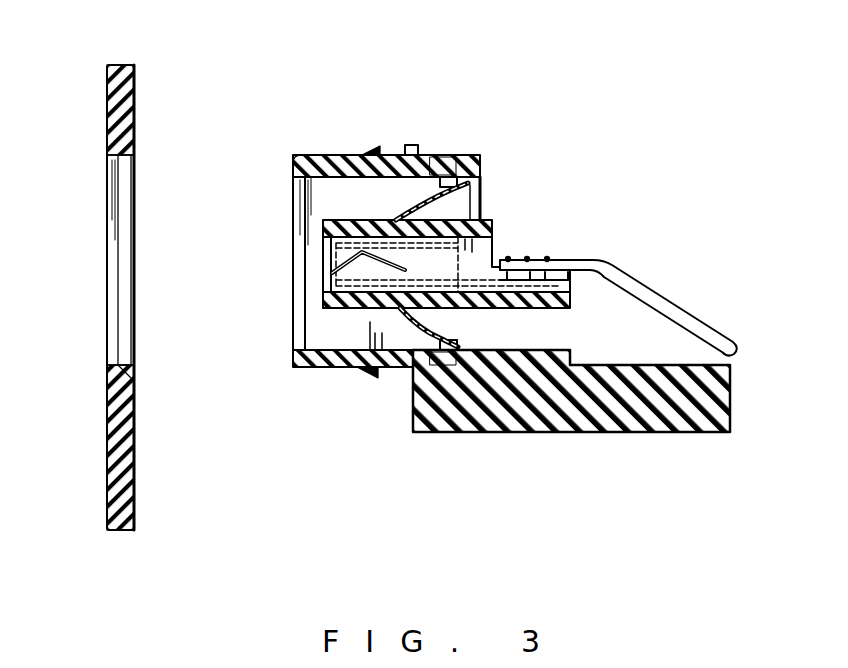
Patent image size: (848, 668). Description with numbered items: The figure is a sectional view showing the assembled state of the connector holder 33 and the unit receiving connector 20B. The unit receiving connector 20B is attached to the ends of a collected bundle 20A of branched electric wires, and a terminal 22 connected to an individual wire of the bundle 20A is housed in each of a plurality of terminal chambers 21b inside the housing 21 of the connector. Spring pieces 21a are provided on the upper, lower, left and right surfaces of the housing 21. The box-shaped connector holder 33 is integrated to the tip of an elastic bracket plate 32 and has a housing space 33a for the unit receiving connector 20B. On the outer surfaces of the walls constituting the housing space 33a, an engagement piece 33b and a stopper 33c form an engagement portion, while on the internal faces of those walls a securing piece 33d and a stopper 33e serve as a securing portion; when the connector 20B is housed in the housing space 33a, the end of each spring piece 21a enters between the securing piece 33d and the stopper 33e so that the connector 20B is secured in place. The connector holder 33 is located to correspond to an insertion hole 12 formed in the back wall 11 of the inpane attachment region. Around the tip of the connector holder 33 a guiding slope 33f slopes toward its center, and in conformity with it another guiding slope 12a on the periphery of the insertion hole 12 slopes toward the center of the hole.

The back wall 11 is at (108, 112).
The insertion hole 12 is at (108, 264).
The guiding slope 12a is at (134, 368).
The electric wire bundle 20A is at (680, 308).
The unit receiving connector 20B is at (510, 244).
The housing 21 is at (483, 207).
The spring piece 21a is at (468, 160).
The terminal chamber 21b is at (325, 270).
The terminal 22 is at (497, 247).
The elastic bracket plate 32 is at (668, 434).
The connector holder 33 is at (318, 156).
The housing space 33a is at (310, 316).
The engagement piece 33b is at (368, 150).
The stopper 33c is at (410, 146).
The securing piece 33d is at (481, 185).
The stopper 33e is at (447, 157).
The guiding slope 33f is at (296, 156).